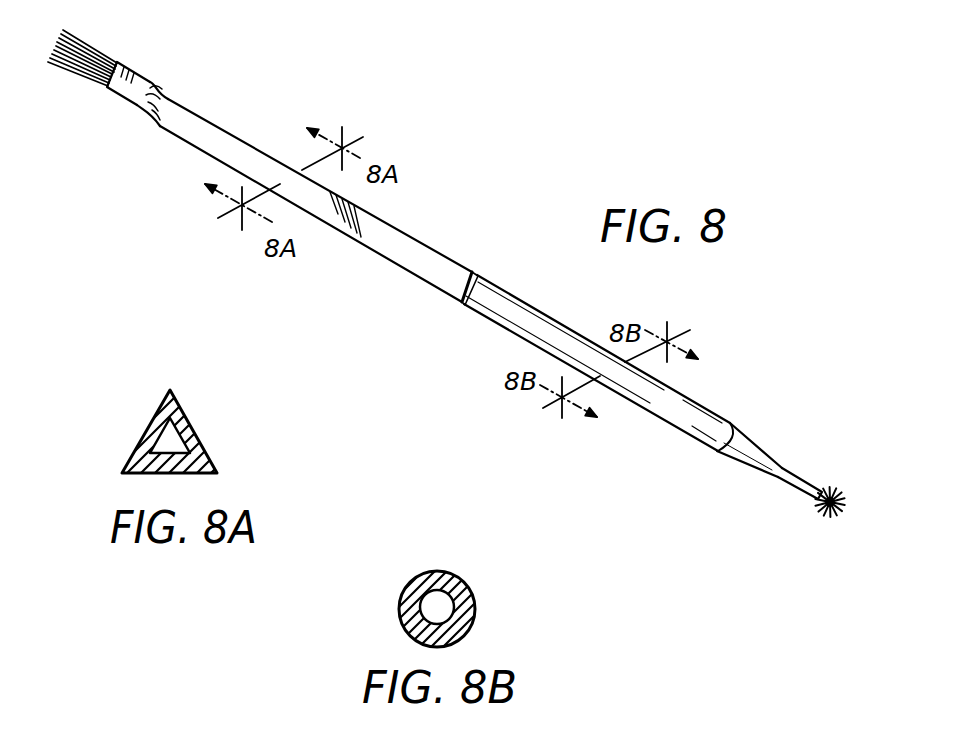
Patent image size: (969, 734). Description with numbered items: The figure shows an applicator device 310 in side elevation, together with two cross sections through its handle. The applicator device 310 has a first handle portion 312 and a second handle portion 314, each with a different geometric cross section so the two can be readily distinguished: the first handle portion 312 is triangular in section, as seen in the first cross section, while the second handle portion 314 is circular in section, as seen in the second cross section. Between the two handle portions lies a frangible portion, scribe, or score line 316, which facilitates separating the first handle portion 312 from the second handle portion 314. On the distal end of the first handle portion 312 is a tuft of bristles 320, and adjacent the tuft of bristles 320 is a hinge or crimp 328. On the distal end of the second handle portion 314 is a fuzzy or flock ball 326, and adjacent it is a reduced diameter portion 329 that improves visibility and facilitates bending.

In FIG. 8, the applicator device 310 is at (518, 264).
In FIG. 8, the first handle portion 312 is at (433, 247).
In FIG. 8A, the first handle portion 312 is at (199, 424).
In FIG. 8, the second handle portion 314 is at (517, 325).
In FIG. 8B, the second handle portion 314 is at (457, 577).
In FIG. 8, the score line 316 is at (460, 292).
In FIG. 8, the tuft of bristles 320 is at (94, 52).
In FIG. 8, the fuzzy or flock ball 326 is at (841, 486).
In FIG. 8, the hinge or crimp 328 is at (163, 92).
In FIG. 8, the reduced diameter portion 329 is at (792, 470).